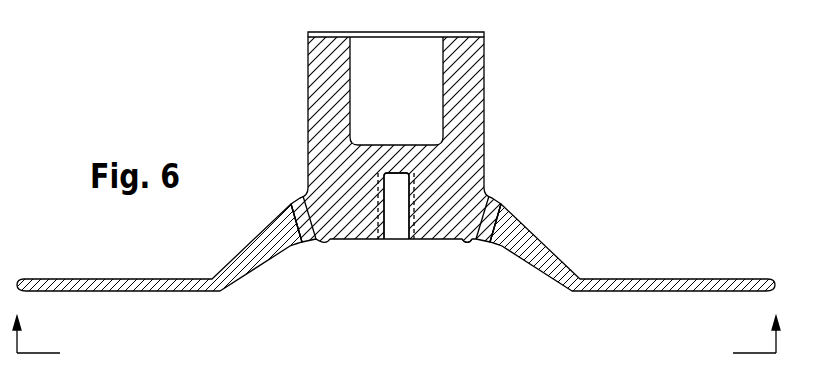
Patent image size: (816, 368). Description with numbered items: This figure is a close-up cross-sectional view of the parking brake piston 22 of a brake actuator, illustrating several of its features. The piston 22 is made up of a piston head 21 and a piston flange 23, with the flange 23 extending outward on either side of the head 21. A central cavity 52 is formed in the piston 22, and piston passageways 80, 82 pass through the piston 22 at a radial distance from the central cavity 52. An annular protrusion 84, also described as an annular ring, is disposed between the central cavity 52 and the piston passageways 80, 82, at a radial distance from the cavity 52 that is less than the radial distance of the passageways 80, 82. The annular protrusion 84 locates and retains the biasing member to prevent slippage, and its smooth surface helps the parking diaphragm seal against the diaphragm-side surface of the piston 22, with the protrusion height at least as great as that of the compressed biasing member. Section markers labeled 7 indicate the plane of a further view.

The piston head 21 is at (471, 104).
The piston 22 is at (257, 87).
The piston flange 23 is at (99, 279).
The central cavity 52 is at (410, 208).
The piston passageway 80 is at (302, 218).
The piston passageway 82 is at (493, 212).
The annular protrusion 84 is at (468, 245).
The section line 7 is at (396, 324).